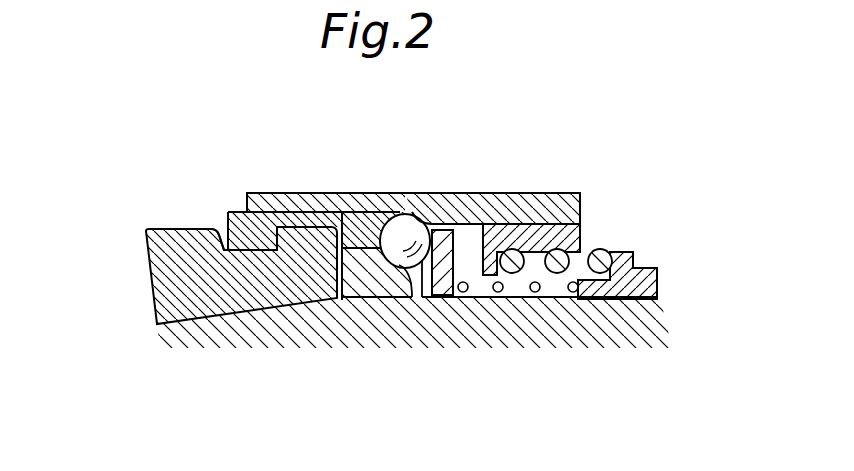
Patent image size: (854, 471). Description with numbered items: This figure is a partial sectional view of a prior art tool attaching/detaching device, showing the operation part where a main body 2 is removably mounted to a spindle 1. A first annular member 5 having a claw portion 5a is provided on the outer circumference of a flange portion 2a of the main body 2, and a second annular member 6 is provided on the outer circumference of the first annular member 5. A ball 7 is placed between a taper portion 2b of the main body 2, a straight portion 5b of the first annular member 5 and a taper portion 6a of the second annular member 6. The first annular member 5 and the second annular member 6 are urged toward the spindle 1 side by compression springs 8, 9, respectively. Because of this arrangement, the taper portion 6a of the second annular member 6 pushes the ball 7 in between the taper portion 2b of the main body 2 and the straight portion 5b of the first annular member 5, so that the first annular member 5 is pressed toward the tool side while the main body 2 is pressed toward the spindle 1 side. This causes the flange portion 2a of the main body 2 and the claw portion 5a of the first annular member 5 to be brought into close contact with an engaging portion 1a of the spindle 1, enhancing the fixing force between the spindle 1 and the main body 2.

The spindle 1 is at (182, 270).
The engaging portion 1a is at (281, 250).
The main body 2 is at (295, 325).
The flange portion 2a is at (362, 277).
The taper portion 2b is at (420, 278).
The first annular member 5 is at (317, 206).
The claw portion 5a is at (235, 222).
The straight portion 5b is at (422, 275).
The second annular member 6 is at (506, 206).
The taper portion 6a is at (412, 218).
The ball 7 is at (402, 222).
The compression spring 8 is at (534, 293).
The compression spring 9 is at (600, 252).